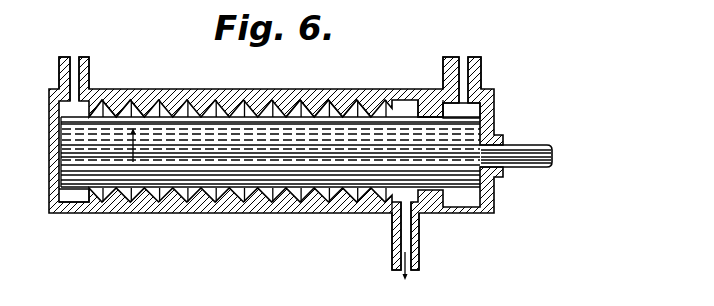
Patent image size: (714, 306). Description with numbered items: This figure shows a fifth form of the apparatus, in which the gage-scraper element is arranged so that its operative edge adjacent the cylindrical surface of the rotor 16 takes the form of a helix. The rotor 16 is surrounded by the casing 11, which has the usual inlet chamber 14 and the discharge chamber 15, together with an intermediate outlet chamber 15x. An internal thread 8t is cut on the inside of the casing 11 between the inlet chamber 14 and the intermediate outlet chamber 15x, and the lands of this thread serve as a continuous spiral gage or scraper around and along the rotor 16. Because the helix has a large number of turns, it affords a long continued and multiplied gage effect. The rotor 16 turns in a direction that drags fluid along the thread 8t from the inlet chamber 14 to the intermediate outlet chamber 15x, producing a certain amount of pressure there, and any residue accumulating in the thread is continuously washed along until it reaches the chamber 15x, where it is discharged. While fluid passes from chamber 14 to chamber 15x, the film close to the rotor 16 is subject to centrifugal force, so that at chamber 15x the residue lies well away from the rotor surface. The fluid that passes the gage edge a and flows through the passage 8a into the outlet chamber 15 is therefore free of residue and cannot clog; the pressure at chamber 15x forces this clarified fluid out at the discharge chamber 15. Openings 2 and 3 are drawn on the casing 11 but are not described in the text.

The inlet nozzle 2 is at (72, 61).
The outlet nozzle 3 is at (463, 67).
The gage edge a is at (117, 116).
The casing 11 is at (180, 91).
The internal thread 8t is at (363, 115).
The passage 8a is at (427, 115).
The discharge chamber 15 is at (465, 110).
The inlet chamber 14 is at (75, 195).
The intermediate outlet chamber 15x is at (403, 195).
The rotor 16 is at (306, 152).